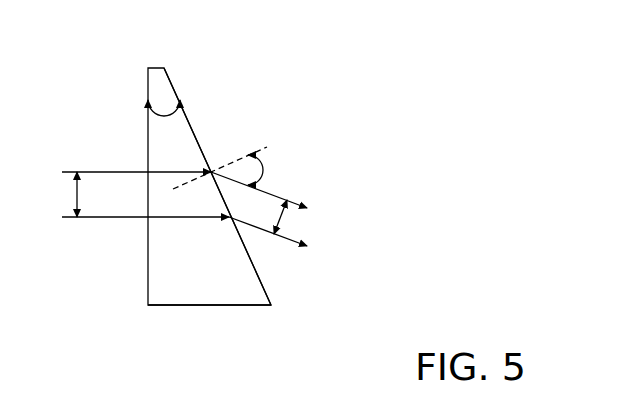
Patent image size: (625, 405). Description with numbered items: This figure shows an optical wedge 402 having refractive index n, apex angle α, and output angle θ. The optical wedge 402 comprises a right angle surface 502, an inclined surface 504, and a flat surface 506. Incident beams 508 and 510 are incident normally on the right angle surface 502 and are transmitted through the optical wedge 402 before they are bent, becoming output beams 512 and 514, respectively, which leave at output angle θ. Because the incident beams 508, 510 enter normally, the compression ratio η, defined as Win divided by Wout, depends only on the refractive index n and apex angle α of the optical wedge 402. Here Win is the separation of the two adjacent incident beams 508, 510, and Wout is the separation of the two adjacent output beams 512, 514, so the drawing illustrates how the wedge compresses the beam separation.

The optical wedge 402 is at (192, 176).
The right angle surface 502 is at (148, 247).
The inclined surface 504 is at (192, 128).
The flat surface 506 is at (233, 307).
The incident beam 508 is at (93, 172).
The incident beam 510 is at (93, 219).
The output beam 512 is at (268, 190).
The output beam 514 is at (292, 241).